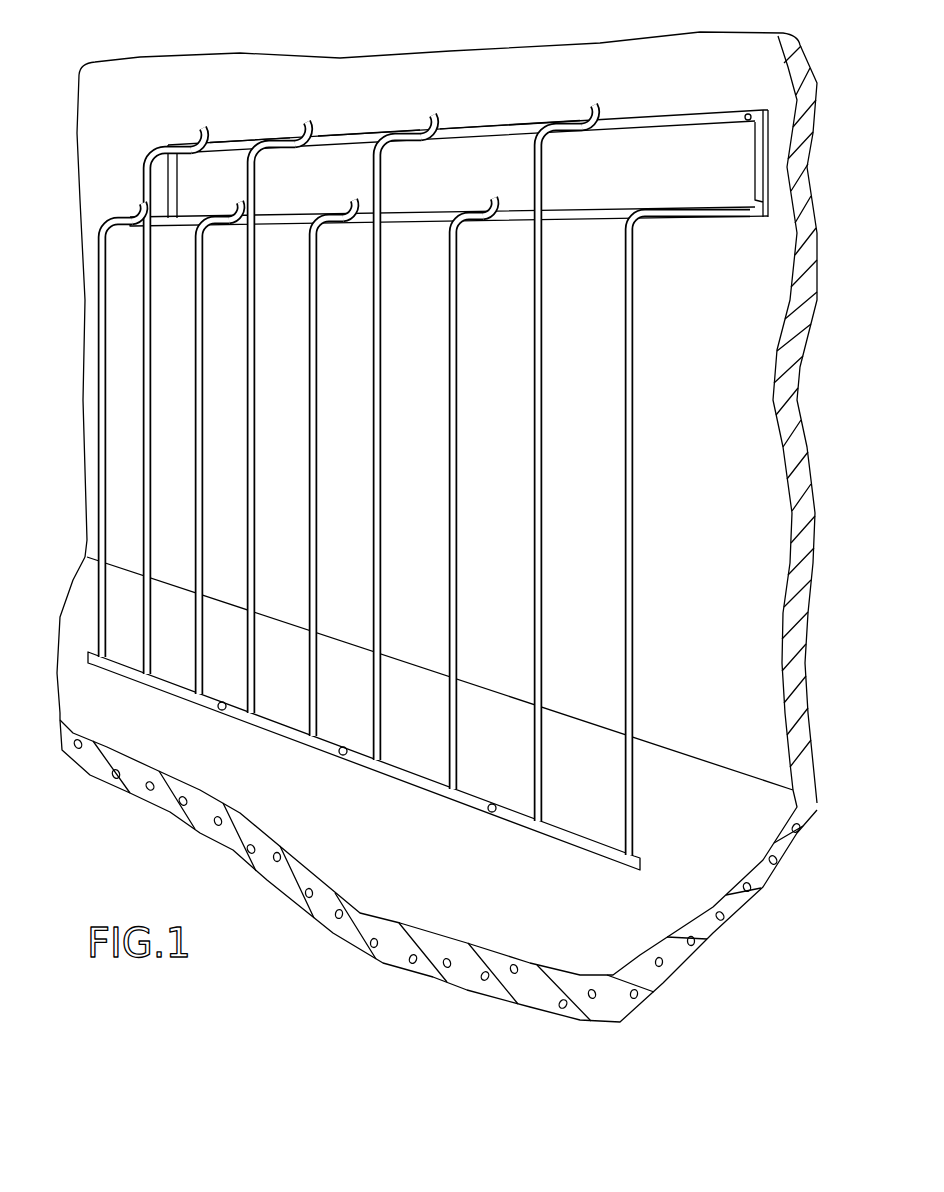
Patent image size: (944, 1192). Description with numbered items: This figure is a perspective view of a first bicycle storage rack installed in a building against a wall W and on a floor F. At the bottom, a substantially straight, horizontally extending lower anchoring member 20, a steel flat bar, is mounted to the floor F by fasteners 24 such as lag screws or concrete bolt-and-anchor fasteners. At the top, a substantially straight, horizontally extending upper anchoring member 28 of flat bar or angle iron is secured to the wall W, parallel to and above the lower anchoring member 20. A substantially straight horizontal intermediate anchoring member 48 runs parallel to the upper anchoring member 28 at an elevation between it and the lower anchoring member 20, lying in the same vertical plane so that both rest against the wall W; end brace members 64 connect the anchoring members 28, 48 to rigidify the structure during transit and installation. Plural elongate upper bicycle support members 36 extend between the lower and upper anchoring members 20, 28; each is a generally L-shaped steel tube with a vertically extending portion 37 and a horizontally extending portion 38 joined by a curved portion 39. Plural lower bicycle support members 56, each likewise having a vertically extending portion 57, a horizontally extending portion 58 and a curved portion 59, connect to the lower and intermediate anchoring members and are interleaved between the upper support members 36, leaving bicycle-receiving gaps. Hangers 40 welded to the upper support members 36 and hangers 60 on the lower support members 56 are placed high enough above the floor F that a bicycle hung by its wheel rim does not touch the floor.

The lower anchoring member 20 is at (428, 474).
The fasteners 24 is at (222, 708).
The upper anchoring member 28 is at (536, 111).
The upper bicycle support member 36 is at (367, 464).
The vertically extending portion 37 is at (245, 365).
The horizontally extending portion 38 is at (233, 140).
The curved portion 39 is at (160, 163).
The hanger 40 is at (210, 132).
The intermediate anchoring member 48 is at (429, 203).
The lower bicycle support member 56 is at (326, 357).
The vertically extending portion 57 is at (466, 502).
The horizontally extending portion 58 is at (505, 221).
The curved portion 59 is at (450, 230).
The hanger 60 is at (347, 210).
The end brace member 64 is at (189, 186).
The wall W is at (323, 77).
The floor F is at (283, 810).